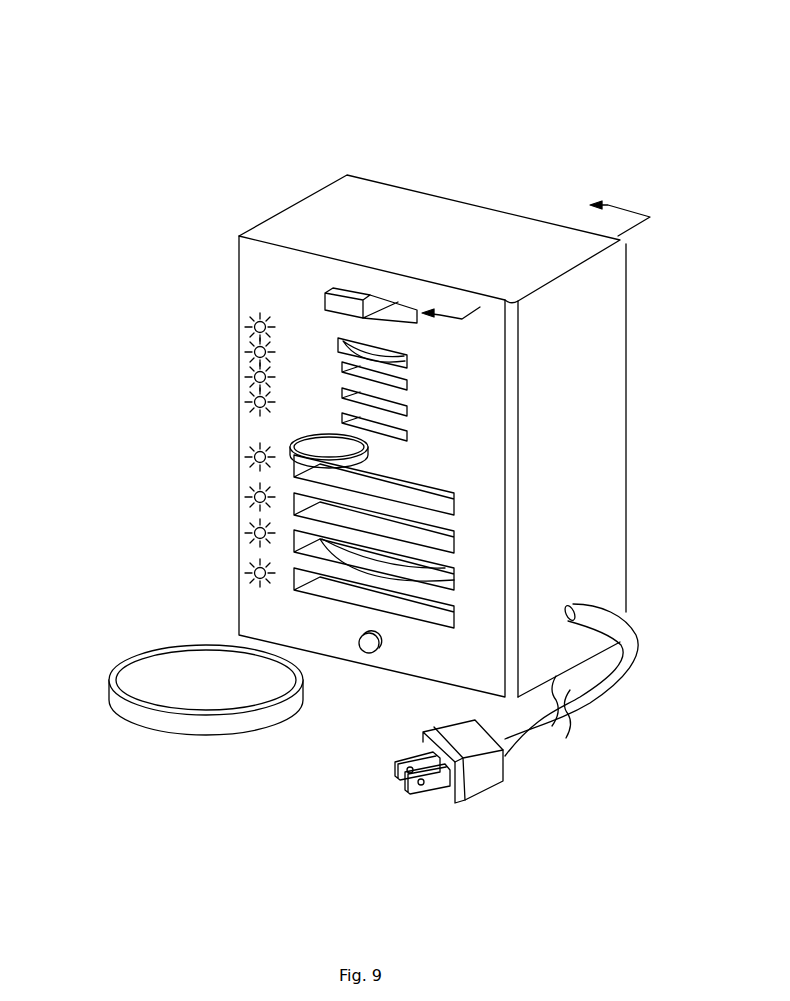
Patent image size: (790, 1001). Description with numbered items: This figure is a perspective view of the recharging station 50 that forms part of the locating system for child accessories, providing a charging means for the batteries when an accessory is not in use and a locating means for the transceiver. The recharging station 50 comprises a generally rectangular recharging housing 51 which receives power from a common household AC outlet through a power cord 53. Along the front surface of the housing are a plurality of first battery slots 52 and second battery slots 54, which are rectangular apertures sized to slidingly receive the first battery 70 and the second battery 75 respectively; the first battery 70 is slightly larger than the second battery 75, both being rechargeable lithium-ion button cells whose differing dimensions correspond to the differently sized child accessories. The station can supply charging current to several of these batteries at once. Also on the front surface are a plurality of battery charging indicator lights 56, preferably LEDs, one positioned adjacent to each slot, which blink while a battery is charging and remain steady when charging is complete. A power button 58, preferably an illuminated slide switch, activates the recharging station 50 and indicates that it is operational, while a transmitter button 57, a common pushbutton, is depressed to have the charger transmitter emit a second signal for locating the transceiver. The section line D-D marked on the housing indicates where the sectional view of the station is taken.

The recharging station 50 is at (98, 93).
The recharging housing 51 is at (469, 216).
The first battery slots 52 is at (443, 620).
The power cord 53 is at (540, 727).
The second battery slots 54 is at (410, 433).
The battery charging indicator lights 56 is at (254, 375).
The transmitter button 57 is at (367, 652).
The power button 58 is at (344, 299).
The first battery 70 is at (340, 560).
The second battery 75 is at (345, 359).